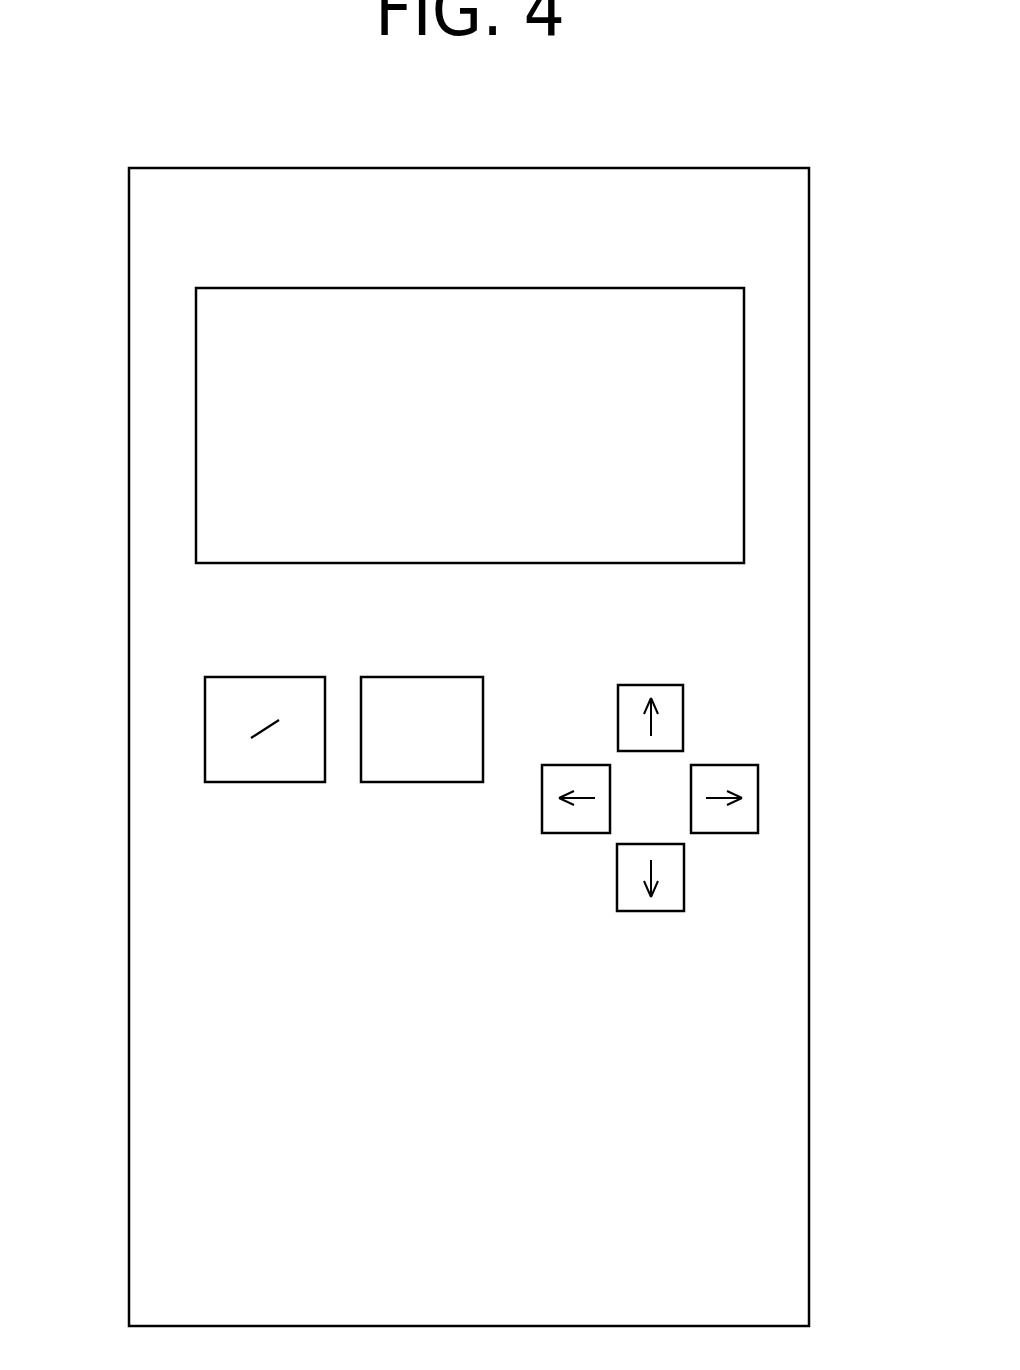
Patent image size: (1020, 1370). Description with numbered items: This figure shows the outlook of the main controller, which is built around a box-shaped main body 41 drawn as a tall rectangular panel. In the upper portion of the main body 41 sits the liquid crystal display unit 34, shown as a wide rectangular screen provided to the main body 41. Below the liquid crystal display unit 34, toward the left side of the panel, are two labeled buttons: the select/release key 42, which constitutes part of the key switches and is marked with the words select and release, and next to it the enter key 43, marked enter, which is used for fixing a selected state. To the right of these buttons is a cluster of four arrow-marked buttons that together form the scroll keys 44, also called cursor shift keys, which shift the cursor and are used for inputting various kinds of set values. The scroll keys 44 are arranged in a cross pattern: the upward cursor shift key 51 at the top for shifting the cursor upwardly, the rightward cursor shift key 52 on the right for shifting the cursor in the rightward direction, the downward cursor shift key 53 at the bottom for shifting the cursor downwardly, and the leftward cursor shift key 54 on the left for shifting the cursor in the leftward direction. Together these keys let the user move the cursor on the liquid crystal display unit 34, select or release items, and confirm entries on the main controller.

The main body 41 is at (658, 168).
The liquid crystal display unit 34 is at (722, 431).
The select/release key 42 is at (205, 737).
The enter key 43 is at (408, 782).
The scroll keys 44 is at (762, 703).
The upward cursor shift key 51 is at (683, 722).
The rightward cursor shift key 52 is at (758, 805).
The downward cursor shift key 53 is at (684, 868).
The leftward cursor shift key 54 is at (568, 833).